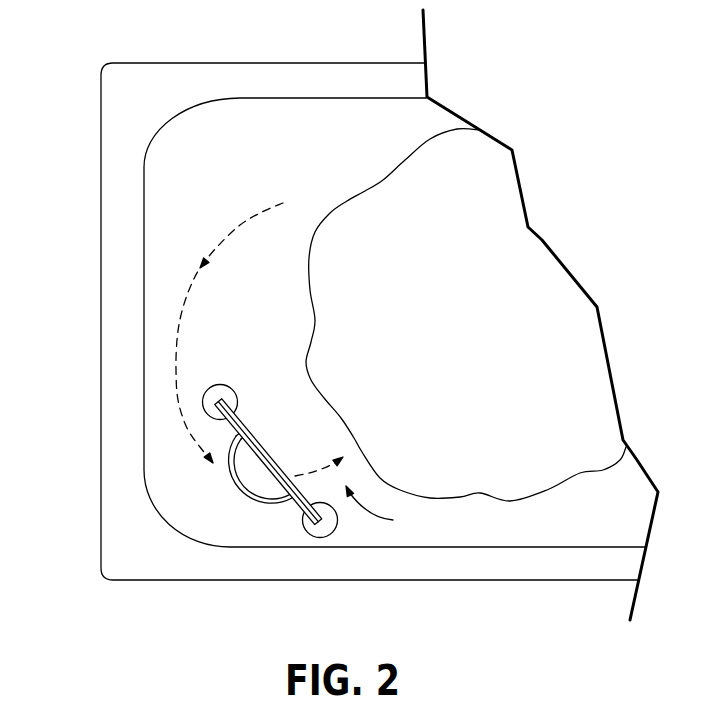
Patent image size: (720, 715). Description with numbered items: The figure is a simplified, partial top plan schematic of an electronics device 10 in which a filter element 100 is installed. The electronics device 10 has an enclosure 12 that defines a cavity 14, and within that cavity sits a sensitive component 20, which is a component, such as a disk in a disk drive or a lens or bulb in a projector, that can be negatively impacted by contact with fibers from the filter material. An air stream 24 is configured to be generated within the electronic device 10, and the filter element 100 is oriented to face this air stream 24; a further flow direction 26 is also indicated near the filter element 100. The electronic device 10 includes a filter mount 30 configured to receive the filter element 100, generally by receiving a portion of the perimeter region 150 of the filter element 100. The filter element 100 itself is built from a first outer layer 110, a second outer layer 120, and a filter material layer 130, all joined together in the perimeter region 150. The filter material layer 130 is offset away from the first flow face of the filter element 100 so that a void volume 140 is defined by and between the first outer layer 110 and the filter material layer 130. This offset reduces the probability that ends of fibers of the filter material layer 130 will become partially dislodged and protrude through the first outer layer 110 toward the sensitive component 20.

The electronics device 10 is at (63, 104).
The enclosure 12 is at (172, 90).
The cavity 14 is at (281, 118).
The sensitive component 20 is at (580, 373).
The air stream 24 is at (223, 233).
The flow direction 26 is at (380, 508).
The filter mount 30 is at (217, 385).
The filter element 100 is at (257, 470).
The first outer layer 110 is at (265, 447).
The second outer layer 120 is at (233, 480).
The filter material layer 130 is at (247, 502).
The void volume 140 is at (267, 477).
The perimeter region 150 is at (236, 408).